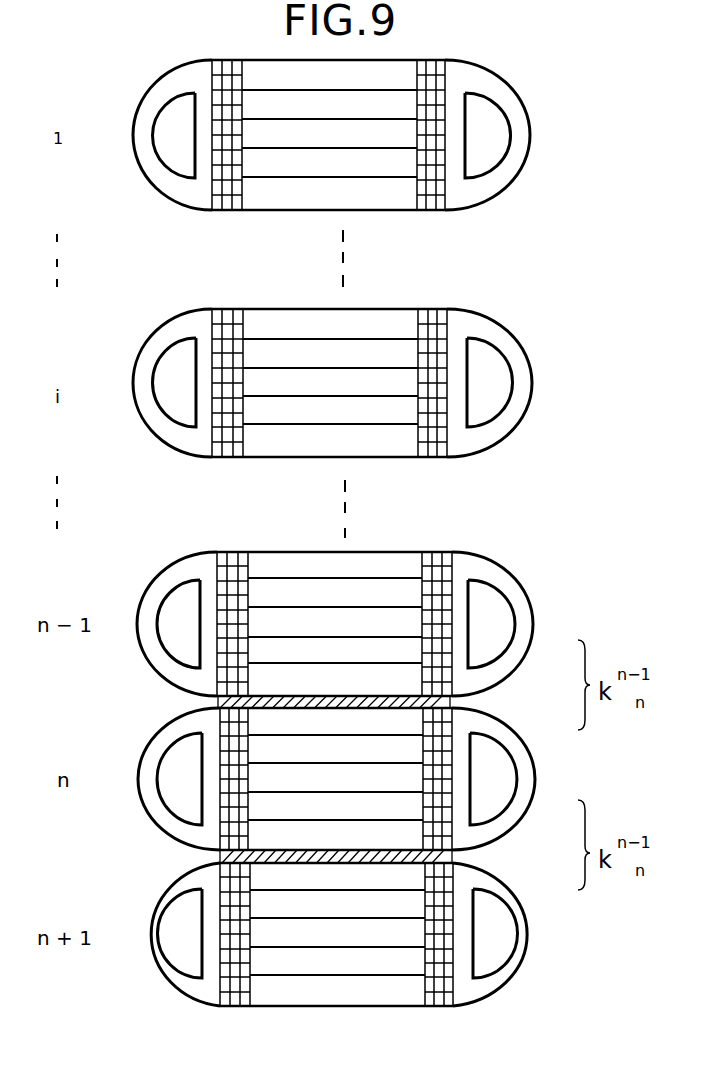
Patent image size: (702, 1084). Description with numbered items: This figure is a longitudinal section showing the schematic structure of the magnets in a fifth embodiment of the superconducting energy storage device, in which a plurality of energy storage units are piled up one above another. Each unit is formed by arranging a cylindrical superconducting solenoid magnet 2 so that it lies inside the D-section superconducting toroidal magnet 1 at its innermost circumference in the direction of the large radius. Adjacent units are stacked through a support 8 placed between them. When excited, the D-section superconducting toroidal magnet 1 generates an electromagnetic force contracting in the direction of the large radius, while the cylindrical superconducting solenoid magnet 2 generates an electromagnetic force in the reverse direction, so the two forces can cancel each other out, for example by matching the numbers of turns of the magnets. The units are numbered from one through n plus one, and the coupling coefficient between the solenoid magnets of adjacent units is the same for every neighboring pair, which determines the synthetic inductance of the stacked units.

The D-section superconducting toroidal magnet 1 is at (510, 97).
The cylindrical superconducting solenoid magnet 2 is at (397, 95).
The support 8 is at (448, 702).